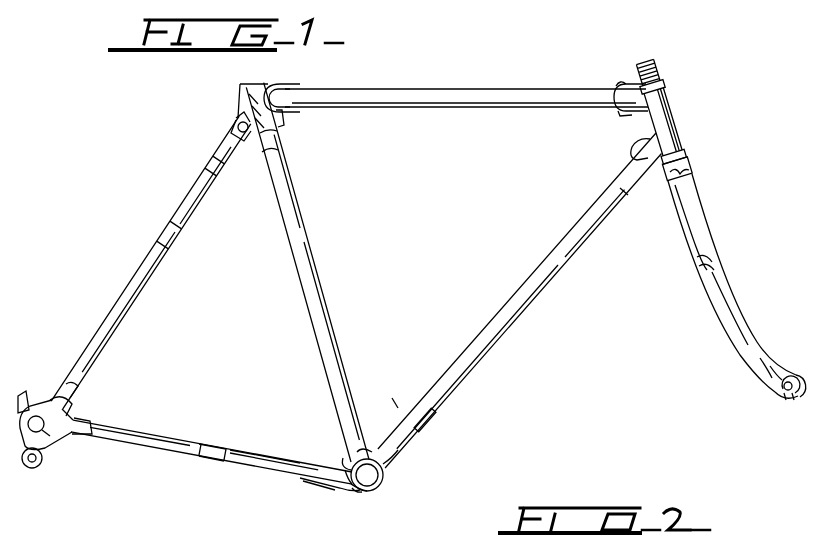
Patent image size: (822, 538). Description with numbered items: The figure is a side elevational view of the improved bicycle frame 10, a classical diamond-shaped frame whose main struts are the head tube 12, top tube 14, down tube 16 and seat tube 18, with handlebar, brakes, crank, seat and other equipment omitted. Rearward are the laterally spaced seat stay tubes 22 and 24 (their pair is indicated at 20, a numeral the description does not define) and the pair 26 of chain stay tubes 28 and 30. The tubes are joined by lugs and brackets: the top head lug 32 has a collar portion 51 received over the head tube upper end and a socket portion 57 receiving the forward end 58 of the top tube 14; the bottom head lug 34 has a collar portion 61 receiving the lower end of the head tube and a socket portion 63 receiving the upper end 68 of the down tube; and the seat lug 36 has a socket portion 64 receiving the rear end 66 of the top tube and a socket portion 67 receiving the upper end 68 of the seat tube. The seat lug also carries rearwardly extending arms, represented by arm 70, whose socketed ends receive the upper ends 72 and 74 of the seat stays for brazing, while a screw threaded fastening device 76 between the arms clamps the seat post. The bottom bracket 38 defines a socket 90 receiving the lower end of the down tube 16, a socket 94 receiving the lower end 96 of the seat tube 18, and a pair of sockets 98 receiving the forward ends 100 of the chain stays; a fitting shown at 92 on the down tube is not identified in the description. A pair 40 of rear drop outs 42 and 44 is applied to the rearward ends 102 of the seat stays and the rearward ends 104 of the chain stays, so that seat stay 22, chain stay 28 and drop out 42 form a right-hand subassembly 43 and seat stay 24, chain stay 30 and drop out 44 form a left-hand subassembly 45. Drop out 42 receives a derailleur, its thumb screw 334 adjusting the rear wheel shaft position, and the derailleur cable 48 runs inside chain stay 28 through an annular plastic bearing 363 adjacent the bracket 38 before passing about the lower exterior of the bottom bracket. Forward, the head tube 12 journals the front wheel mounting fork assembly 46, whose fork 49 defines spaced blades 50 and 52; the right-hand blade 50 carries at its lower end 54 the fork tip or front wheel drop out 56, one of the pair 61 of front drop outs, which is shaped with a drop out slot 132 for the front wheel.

The bicycle frame 10 is at (455, 82).
The head tube 12 is at (672, 114).
The top tube 14 is at (396, 88).
The down tube 16 is at (503, 342).
The seat tube 18 is at (303, 219).
The seat stay assembly 20 is at (128, 243).
The seat stay tube 22 is at (134, 297).
The seat stay tube 24 is at (177, 240).
The pair of chain stay tubes 26 is at (138, 463).
The chain stay tube 28 is at (243, 458).
The chain stay tube 30 is at (213, 441).
The top head lug 32 is at (655, 47).
The bottom head lug 34 is at (700, 154).
The seat lug 36 is at (224, 82).
The bottom bracket 38 is at (382, 418).
The pair of rear wheel bearing brackets 40 is at (50, 397).
The drop out 42 is at (68, 413).
The first seat stay-chain stay subassembly 43 is at (172, 480).
The drop out 44 is at (57, 403).
The second seat stay-chain stay subassembly 45 is at (120, 206).
The front wheel mounting fork assembly 46 is at (722, 212).
The cable 48 is at (410, 456).
The fork 49 is at (687, 233).
The fork right hand blade 50 is at (743, 353).
The collar portion 51 is at (664, 83).
The left hand fork blade 52 is at (712, 258).
The lower end 54 is at (727, 302).
The fork tip or front wheel drop out 56 is at (762, 403).
The socket portion 57 is at (618, 88).
The forward end 58 is at (573, 105).
The collar portion 61 is at (686, 150).
The socket portion 63 is at (640, 147).
The socket portion 64 is at (288, 86).
The rear end 66 is at (280, 127).
The socket portion 67 is at (318, 103).
The upper end 68 is at (266, 150).
The arm 70 is at (237, 126).
The upper end 72 is at (218, 158).
The upper end 74 is at (210, 168).
The screw threaded fastening device 76 is at (238, 118).
The socket 90 is at (400, 385).
The cable stop 92 is at (436, 430).
The socket 94 is at (352, 458).
The lower end 96 is at (361, 385).
The sockets 98 is at (345, 486).
The forward extending ends 100 is at (342, 470).
The rearwardly extending ends 102 is at (80, 370).
The rearwardly extending ends 104 is at (105, 432).
The drop out slot 132 is at (779, 418).
The thumb screw 334 is at (30, 380).
The annular plastic bearing 363 is at (312, 476).